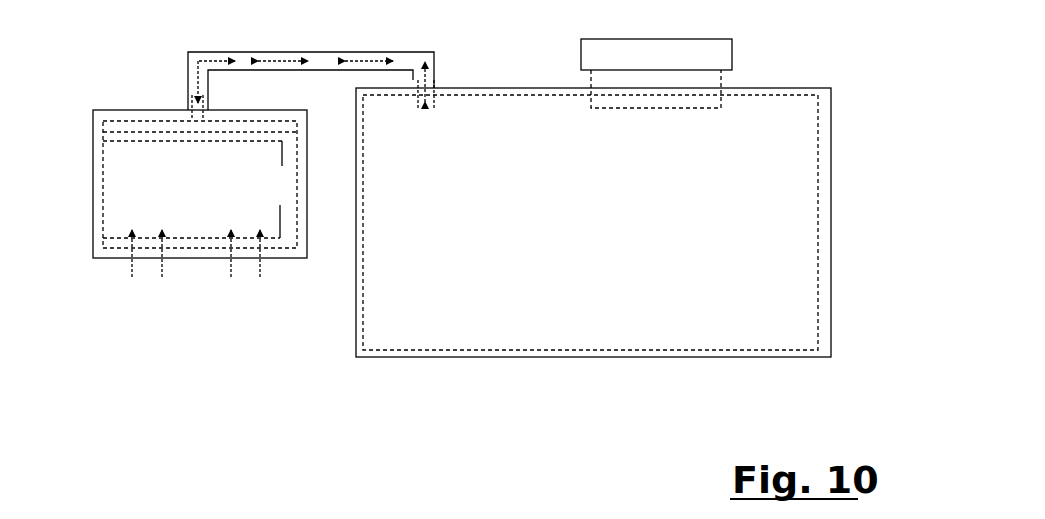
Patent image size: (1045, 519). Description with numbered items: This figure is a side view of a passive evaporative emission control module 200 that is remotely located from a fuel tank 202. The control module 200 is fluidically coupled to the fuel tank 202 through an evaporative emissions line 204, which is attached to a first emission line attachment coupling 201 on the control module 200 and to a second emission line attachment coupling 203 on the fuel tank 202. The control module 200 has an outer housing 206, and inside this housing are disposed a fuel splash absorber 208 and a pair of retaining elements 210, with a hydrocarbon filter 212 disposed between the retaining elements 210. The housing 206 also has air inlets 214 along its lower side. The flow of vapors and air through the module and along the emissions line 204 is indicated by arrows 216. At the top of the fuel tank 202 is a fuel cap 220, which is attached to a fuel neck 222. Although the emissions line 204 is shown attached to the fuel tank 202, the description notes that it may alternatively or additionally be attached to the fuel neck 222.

The passive evaporative emission control module 200 is at (93, 155).
The first emission line attachment coupling 201 is at (188, 100).
The fuel tank 202 is at (547, 88).
The second emission line attachment coupling 203 is at (434, 83).
The evaporative emissions line 204 is at (313, 50).
The outer housing 206 is at (95, 217).
The fuel splash absorber 208 is at (243, 125).
The retaining elements 210 is at (280, 205).
The hydrocarbon filter 212 is at (213, 195).
The air inlets 214 is at (128, 254).
The arrows 216 is at (216, 59).
The fuel cap 220 is at (733, 48).
The fuel neck 222 is at (722, 80).